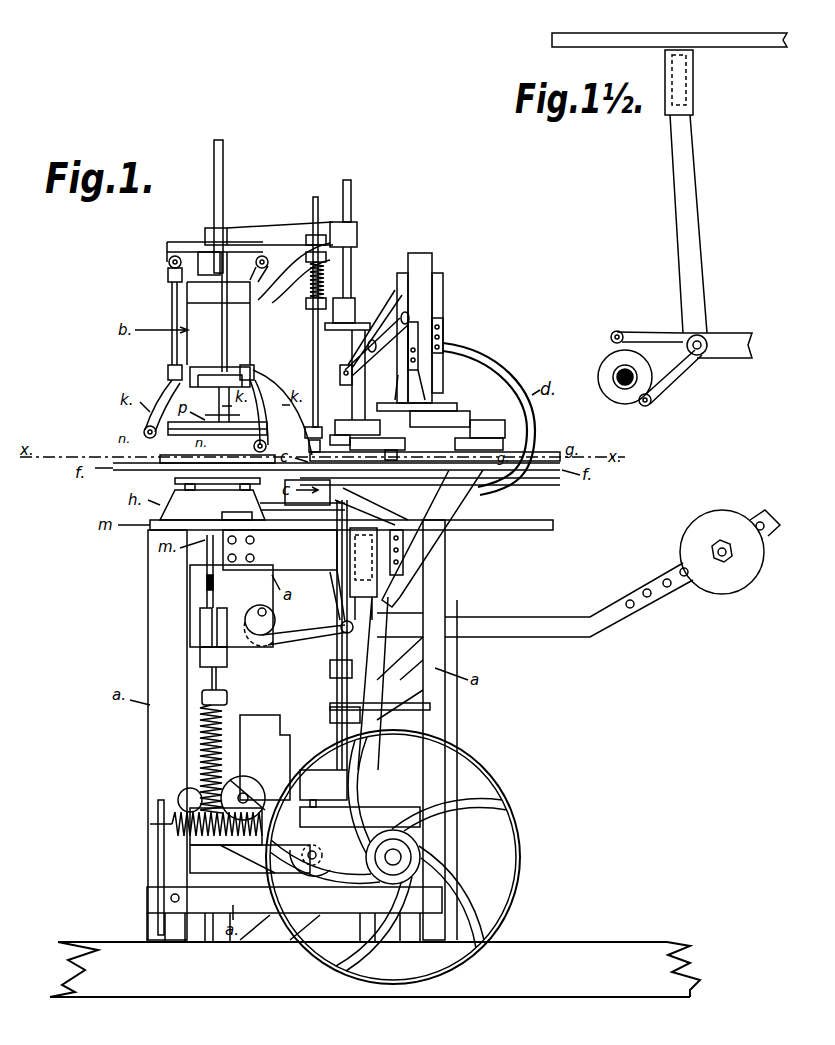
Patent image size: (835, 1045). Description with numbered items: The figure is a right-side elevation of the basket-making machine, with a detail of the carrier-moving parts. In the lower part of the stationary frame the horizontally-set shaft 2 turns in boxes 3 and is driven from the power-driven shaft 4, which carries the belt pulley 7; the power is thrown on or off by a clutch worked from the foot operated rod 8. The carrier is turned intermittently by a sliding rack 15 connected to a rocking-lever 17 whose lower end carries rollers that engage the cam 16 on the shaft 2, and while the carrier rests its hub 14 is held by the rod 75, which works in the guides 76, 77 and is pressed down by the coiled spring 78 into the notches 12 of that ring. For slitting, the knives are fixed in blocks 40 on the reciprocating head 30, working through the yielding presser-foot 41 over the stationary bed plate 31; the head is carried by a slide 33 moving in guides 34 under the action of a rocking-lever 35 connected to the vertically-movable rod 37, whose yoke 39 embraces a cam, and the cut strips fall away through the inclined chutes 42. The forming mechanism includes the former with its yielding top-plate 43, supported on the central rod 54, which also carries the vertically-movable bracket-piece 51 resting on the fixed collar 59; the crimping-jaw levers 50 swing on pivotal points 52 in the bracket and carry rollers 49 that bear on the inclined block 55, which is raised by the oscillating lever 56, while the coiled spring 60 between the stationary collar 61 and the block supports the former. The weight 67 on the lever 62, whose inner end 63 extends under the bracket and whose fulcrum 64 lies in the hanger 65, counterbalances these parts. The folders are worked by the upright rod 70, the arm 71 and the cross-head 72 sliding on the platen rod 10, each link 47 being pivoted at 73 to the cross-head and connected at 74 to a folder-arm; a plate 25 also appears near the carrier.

In FIG. 1, the horizontally-set shaft 2 is at (312, 865).
The horizontally-set shaft 2 is at (612, 377).
In FIG. 1, the boxes 3 is at (320, 877).
In FIG. 1, the power-driven shaft 4 is at (405, 860).
In FIG. 1, the pulley 7 is at (520, 860).
In FIG. 1, the foot operated rod 8 is at (155, 820).
In FIG. 1, the rod 10 is at (231, 206).
In FIG. 1, the notches 12 is at (309, 445).
In FIG. 1, the hub 14 is at (435, 461).
In FIG. 1, the sliding rack 15 is at (510, 528).
The sliding rack 15 is at (628, 38).
The cam 16 is at (600, 362).
In FIG. 1, the rocking-lever 17 is at (350, 583).
The rocking-lever 17 is at (680, 218).
In FIG. 1, the plate 25 is at (215, 452).
In FIG. 1, the reciprocating head 30 is at (410, 426).
In FIG. 1, the stationary bed plate 31 is at (371, 506).
In FIG. 1, the slide 33 is at (422, 317).
In FIG. 1, the guides 34 is at (443, 300).
In FIG. 1, the rocking-lever 35 is at (360, 355).
In FIG. 1, the vertically-movable rod 37 is at (352, 393).
In FIG. 1, the yoke 39 is at (360, 798).
In FIG. 1, the blocks 40 is at (484, 428).
In FIG. 1, the yielding presser-foot 41 is at (402, 458).
In FIG. 1, the inclined chutes 42 is at (440, 530).
In FIG. 1, the yielding top-plate 43 is at (175, 481).
In FIG. 1, the link 47 is at (172, 312).
In FIG. 1, the rollers 49 is at (240, 775).
In FIG. 1, the upright levers 50 is at (260, 600).
In FIG. 1, the vertically-movable bracket-piece 51 is at (198, 635).
In FIG. 1, the pivotal points 52 is at (255, 625).
In FIG. 1, the central rod 54 is at (203, 679).
In FIG. 1, the block 55 is at (190, 815).
In FIG. 1, the oscillating lever 56 is at (303, 825).
In FIG. 1, the fixed collar 59 is at (200, 660).
In FIG. 1, the coiled spring 60 is at (222, 745).
In FIG. 1, the stationary collar 61 is at (227, 695).
In FIG. 1, the lever 62 is at (540, 617).
In FIG. 1, the inner end 63 is at (268, 640).
In FIG. 1, the fulcrum 64 is at (340, 625).
In FIG. 1, the hanger 65 is at (327, 610).
In FIG. 1, the weight 67 is at (710, 520).
In FIG. 1, the upright rod 70 is at (352, 198).
In FIG. 1, the arm 71 is at (295, 225).
In FIG. 1, the cross-head 72 is at (205, 240).
In FIG. 1, the pivot 73 is at (168, 262).
In FIG. 1, the connection 74 is at (168, 370).
In FIG. 1, the rod 75 is at (313, 200).
In FIG. 1, the guide 76 is at (355, 300).
In FIG. 1, the guide 77 is at (306, 304).
In FIG. 1, the coiled spring 78 is at (310, 285).